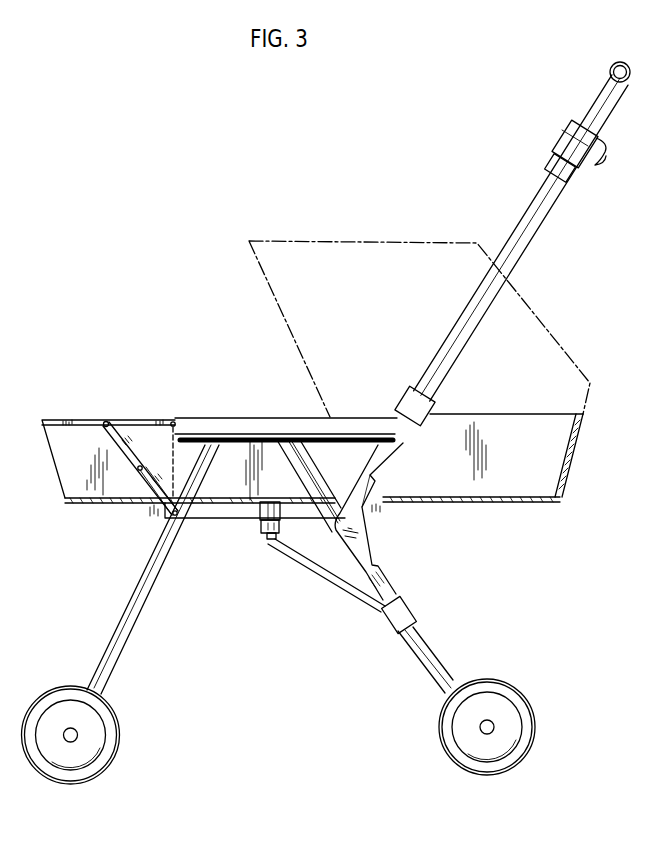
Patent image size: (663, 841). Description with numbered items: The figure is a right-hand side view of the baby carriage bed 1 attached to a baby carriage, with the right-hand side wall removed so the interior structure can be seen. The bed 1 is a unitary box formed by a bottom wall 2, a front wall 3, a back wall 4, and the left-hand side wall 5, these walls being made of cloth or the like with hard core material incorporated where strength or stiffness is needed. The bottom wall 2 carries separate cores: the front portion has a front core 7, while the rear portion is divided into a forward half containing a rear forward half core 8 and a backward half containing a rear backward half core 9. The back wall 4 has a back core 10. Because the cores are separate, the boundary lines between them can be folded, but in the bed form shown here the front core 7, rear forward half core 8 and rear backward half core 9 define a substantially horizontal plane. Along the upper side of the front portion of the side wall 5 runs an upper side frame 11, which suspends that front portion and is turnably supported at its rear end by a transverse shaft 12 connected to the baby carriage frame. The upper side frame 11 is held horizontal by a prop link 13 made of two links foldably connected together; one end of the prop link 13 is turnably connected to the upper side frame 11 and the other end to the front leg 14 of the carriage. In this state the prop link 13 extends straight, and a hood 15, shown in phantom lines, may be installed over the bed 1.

The baby carriage bed 1 is at (452, 505).
The bottom wall 2 is at (388, 502).
The front wall 3 is at (52, 463).
The back wall 4 is at (568, 452).
The left-hand side wall 5 is at (503, 421).
The front core 7 is at (105, 503).
The rear forward half core 8 is at (232, 501).
The rear backward half core 9 is at (503, 499).
The back core 10 is at (579, 432).
The upper side frame 11 is at (125, 418).
The transverse shaft 12 is at (171, 418).
The prop link 13 is at (150, 488).
The front leg 14 is at (133, 620).
The hood 15 is at (373, 242).